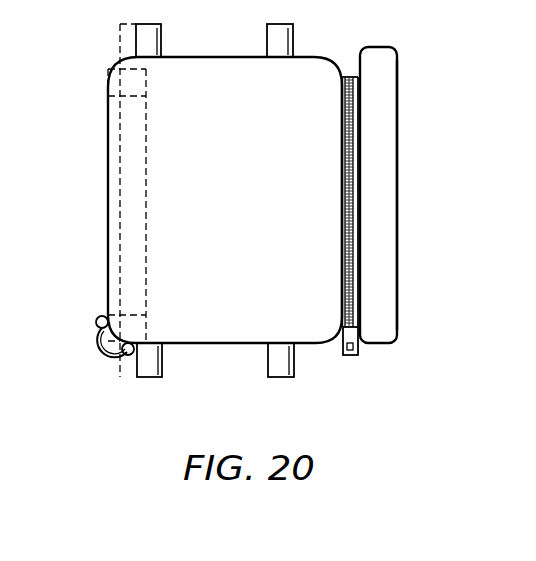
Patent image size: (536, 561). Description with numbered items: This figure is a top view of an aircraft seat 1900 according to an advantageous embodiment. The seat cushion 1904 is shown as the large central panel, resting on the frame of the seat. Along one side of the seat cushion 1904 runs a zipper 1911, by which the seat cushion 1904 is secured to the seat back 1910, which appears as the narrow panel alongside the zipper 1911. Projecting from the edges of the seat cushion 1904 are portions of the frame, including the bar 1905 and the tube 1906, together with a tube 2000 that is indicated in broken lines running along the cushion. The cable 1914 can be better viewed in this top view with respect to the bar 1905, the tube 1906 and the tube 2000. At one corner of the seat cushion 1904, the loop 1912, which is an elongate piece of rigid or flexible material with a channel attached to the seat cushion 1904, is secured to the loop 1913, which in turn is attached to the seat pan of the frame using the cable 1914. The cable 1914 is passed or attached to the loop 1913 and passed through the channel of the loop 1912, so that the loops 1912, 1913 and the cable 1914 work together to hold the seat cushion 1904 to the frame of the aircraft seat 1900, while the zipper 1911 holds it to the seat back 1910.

The seat cushion 1904 is at (258, 212).
The tube 2000 is at (108, 97).
The cable 1914 is at (118, 36).
The loop 1912 is at (97, 318).
The loop 1913 is at (128, 358).
The bar 1905 is at (162, 360).
The bar 1906 is at (278, 377).
The zipper 1911 is at (348, 77).
The aircraft seat 1900 is at (397, 92).
The seat back 1910 is at (397, 198).